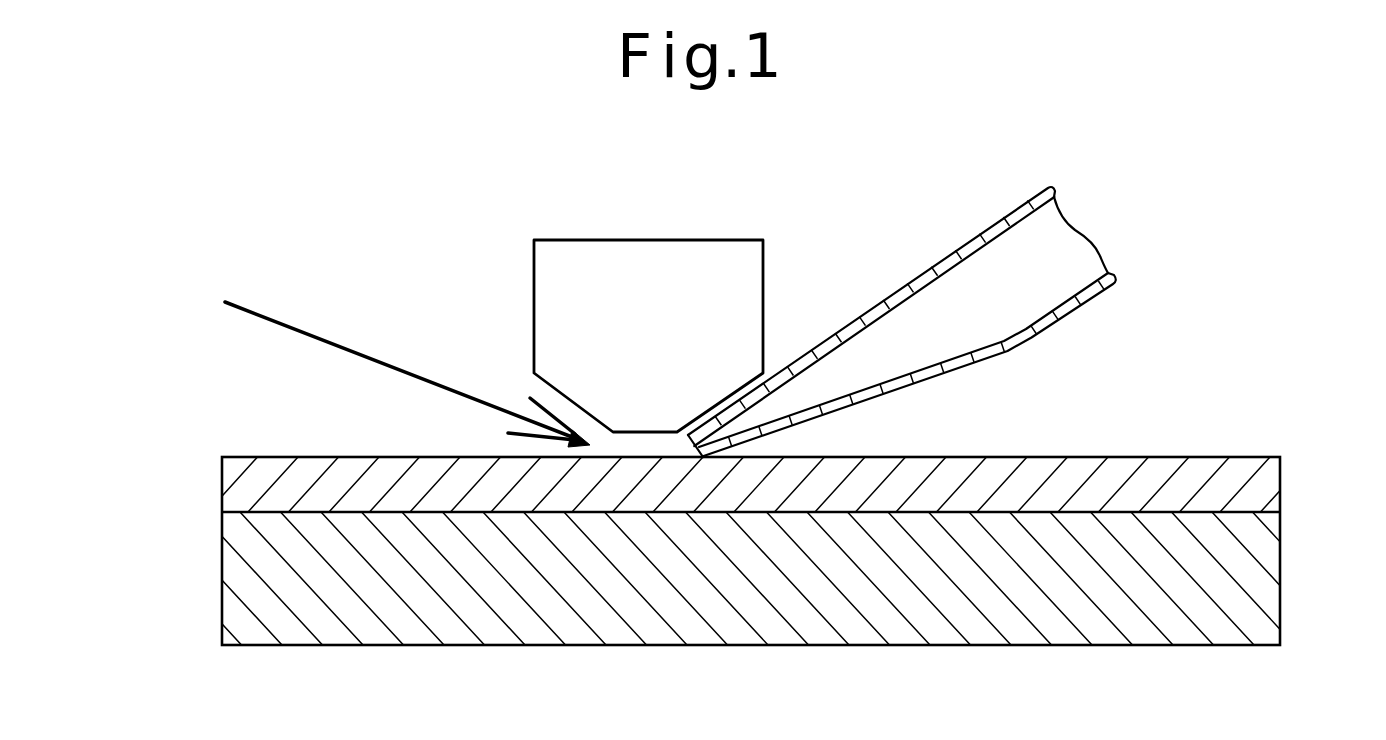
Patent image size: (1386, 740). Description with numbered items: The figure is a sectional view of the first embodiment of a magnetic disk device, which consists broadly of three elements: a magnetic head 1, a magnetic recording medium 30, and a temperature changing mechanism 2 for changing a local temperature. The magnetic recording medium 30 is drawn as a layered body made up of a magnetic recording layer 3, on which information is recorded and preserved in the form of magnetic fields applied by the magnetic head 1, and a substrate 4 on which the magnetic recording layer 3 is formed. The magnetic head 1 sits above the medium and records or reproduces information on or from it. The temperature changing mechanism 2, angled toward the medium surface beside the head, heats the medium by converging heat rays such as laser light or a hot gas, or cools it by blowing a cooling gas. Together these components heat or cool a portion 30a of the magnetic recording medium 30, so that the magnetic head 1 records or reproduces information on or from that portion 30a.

The magnetic head 1 is at (607, 260).
The temperature changing mechanism 2 is at (1100, 245).
The magnetic recording layer 3 is at (302, 477).
The substrate 4 is at (544, 610).
The magnetic recording medium 30 is at (1277, 443).
The portion of the magnetic recording medium 30a is at (290, 318).